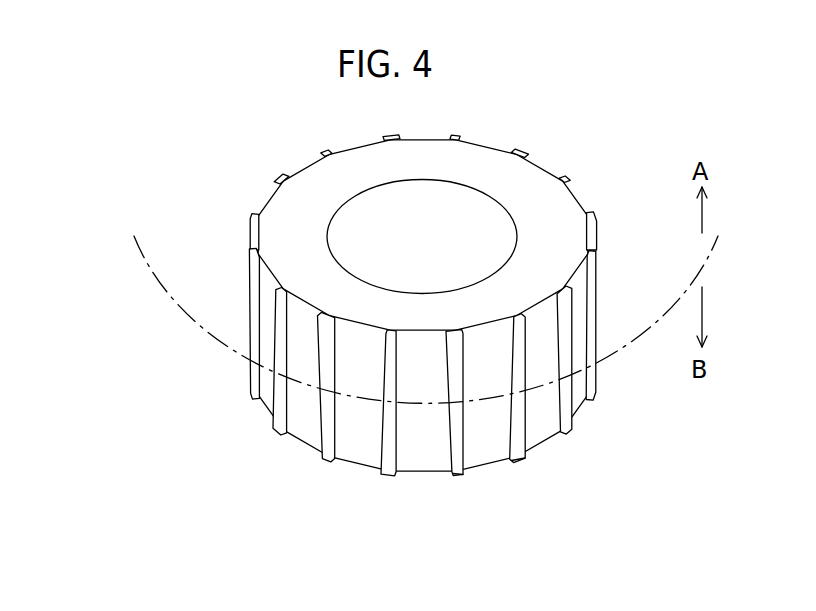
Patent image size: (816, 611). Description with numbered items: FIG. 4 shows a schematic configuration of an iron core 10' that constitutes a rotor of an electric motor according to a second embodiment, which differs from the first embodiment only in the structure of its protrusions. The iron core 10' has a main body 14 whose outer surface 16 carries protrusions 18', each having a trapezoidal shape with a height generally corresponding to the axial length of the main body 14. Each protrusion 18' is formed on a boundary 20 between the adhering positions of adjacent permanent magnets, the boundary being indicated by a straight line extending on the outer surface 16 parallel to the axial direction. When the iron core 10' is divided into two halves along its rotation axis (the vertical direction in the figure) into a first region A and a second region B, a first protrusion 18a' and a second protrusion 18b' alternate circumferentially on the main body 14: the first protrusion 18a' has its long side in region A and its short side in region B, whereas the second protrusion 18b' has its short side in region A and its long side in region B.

The iron core 10' is at (335, 332).
The main body 14 is at (487, 160).
The outer surface 16 is at (542, 423).
The protrusion 18' is at (323, 409).
The first protrusion 18a' is at (345, 361).
The second protrusion 18b' is at (357, 371).
The boundary 20 is at (516, 482).